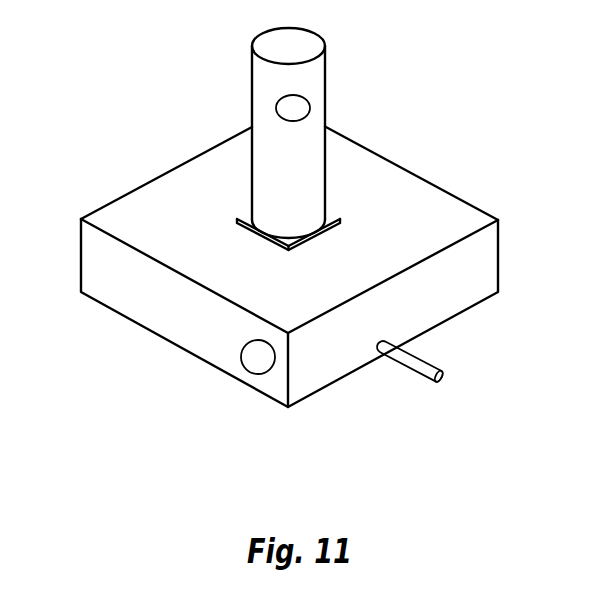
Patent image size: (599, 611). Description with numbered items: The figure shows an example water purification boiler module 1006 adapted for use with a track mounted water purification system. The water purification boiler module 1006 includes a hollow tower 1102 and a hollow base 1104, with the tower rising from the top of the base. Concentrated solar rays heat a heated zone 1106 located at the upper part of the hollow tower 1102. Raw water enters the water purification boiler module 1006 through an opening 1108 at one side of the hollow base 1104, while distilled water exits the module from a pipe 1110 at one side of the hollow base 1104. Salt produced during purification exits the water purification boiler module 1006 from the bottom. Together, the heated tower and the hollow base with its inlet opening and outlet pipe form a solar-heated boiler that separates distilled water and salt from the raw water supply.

The water purification boiler module 1006 is at (93, 91).
The hollow tower 1102 is at (344, 72).
The hollow base 1104 is at (434, 167).
The heated zone 1106 is at (277, 109).
The opening 1108 is at (246, 369).
The pipe 1110 is at (432, 383).